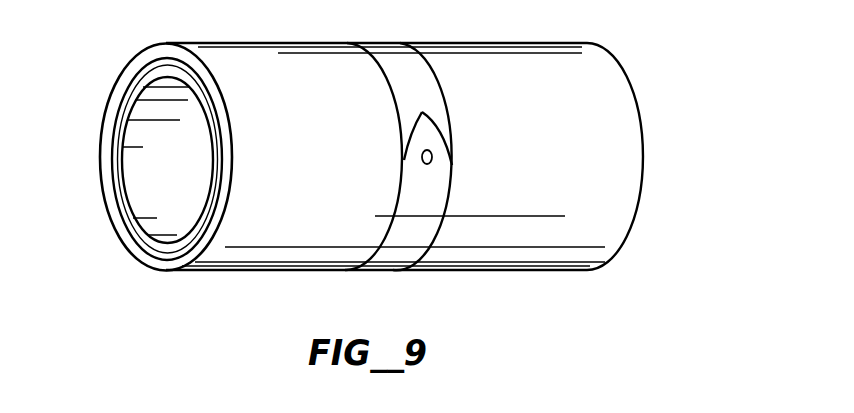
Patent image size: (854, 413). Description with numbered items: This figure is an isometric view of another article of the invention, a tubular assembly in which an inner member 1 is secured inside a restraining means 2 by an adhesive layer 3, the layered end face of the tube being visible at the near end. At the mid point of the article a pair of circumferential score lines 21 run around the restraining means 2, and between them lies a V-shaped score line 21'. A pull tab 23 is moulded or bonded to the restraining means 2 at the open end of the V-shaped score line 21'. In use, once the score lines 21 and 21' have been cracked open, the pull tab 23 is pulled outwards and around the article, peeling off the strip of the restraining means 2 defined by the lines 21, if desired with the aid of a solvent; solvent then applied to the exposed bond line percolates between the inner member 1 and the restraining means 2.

The inner member 1 is at (147, 82).
The restraining means 2 is at (625, 108).
The adhesive layer 3 is at (140, 240).
The circumferential score lines 21 is at (412, 156).
The V-shaped score line 21' is at (427, 138).
The pull tab 23 is at (432, 161).